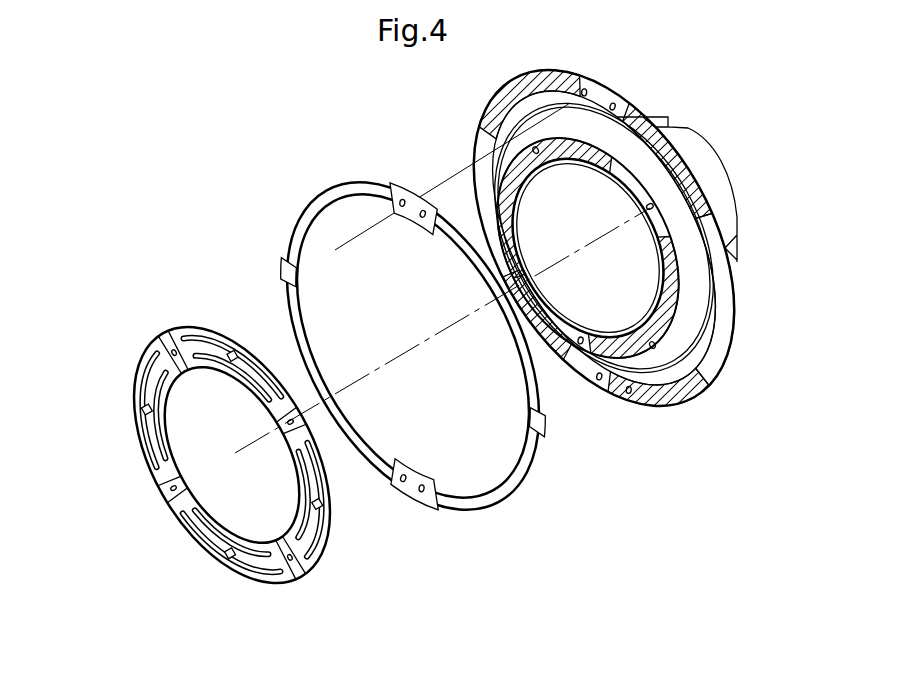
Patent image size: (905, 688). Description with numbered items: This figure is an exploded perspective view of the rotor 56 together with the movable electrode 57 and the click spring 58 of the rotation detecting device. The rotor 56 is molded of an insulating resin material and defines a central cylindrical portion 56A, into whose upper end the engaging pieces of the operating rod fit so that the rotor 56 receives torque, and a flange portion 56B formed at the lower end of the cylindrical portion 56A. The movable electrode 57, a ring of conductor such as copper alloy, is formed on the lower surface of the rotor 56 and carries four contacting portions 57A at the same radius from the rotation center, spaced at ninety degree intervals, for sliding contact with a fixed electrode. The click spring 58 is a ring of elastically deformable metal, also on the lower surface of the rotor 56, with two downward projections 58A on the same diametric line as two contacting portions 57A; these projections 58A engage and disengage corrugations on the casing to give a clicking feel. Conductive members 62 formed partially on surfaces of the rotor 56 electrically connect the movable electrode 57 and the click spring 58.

The rotor 56 is at (470, 132).
The cylindrical portion 56A is at (712, 177).
The flange portion 56B is at (712, 347).
The movable electrode 57 is at (167, 334).
The contacting portions 57A is at (234, 351).
The click spring 58 is at (325, 205).
The projections 58A is at (289, 266).
The conductive members 62 is at (522, 96).